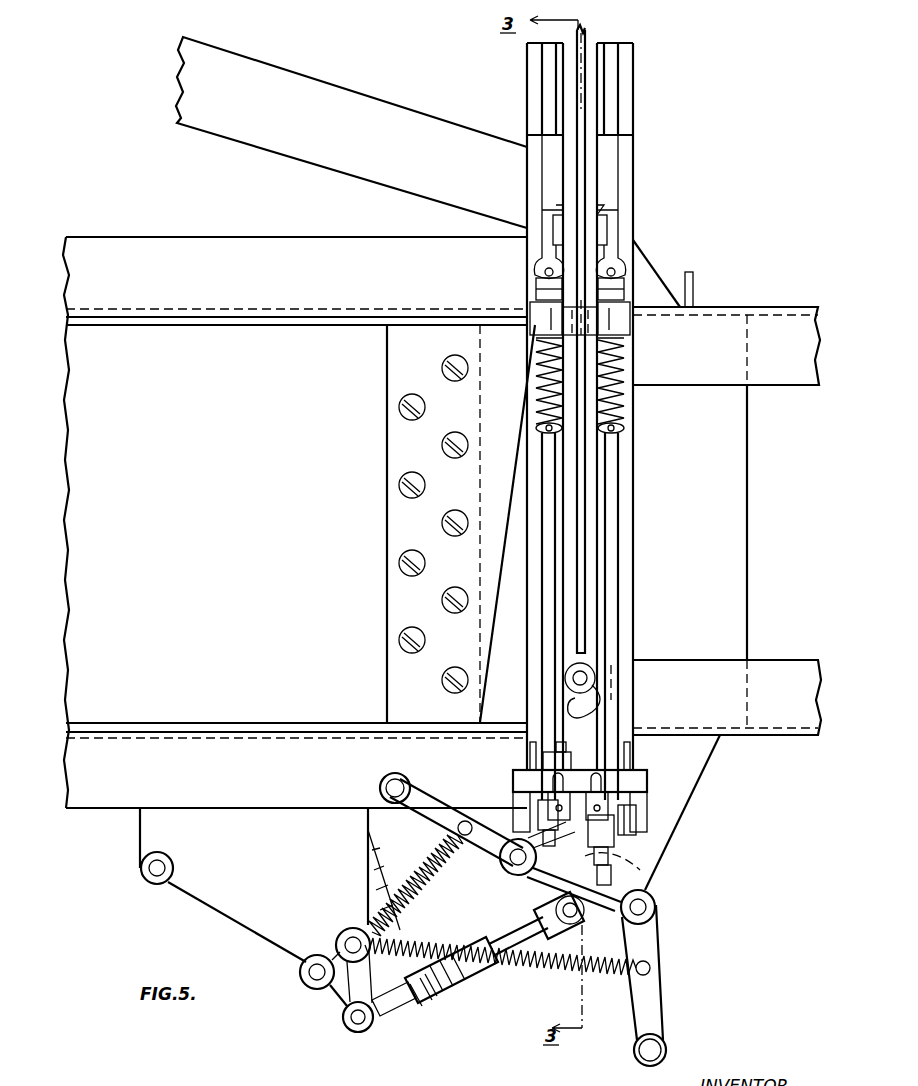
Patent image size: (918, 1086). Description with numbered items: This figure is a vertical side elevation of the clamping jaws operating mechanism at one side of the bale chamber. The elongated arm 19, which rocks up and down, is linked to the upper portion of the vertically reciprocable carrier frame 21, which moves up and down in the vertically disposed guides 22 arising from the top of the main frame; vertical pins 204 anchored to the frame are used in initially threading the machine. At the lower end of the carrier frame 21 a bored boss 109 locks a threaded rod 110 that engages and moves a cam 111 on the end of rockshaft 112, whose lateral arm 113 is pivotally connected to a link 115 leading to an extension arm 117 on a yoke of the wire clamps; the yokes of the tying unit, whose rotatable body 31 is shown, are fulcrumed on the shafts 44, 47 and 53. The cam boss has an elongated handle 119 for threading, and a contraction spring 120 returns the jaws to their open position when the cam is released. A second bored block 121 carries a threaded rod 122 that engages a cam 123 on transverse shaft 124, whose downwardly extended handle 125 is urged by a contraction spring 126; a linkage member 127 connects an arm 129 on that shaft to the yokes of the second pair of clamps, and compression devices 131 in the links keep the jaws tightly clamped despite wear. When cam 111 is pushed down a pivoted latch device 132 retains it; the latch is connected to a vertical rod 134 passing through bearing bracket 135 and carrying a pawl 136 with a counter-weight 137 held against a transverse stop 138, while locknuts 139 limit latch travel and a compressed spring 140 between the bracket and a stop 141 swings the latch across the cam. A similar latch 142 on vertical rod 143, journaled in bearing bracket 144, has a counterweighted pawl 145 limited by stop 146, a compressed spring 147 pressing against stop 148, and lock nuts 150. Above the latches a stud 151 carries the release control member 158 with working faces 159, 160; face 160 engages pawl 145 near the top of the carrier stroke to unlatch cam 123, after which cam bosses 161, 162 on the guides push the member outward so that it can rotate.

The elongated arm 19 is at (330, 88).
The carrier frame 21 is at (630, 40).
The guides 22 is at (530, 74).
The rotatable body 31 is at (392, 836).
The shaft 44 is at (303, 978).
The shaft 47 is at (344, 936).
The shaft 53 is at (165, 860).
The bored boss 109 is at (528, 772).
The threaded rod 110 is at (562, 748).
The cam 111 is at (528, 840).
The rockshaft 112 is at (510, 862).
The arm 113 is at (522, 880).
The link 115 is at (535, 935).
The extension arm 117 is at (392, 1018).
The elongated handle 119 is at (428, 798).
The contraction spring 120 is at (442, 850).
The bored block 121 is at (636, 830).
The threaded rod 122 is at (612, 882).
The cam 123 is at (575, 919).
The transverse shaft 124 is at (656, 908).
The handle 125 is at (655, 996).
The contraction spring 126 is at (530, 968).
The linkage member 127 is at (474, 930).
The arm 129 is at (640, 870).
The compression device 131 is at (424, 1000).
The latch device 132 is at (538, 810).
The elongated rod 134 is at (548, 685).
The bearing bracket 135 is at (542, 320).
The pawl 136 is at (555, 228).
The counter-weight 137 is at (545, 252).
The transverse stop 138 is at (560, 210).
The locknuts 139 is at (537, 296).
The compressed spring 140 is at (540, 392).
The transverse stop 141 is at (540, 428).
The latch 142 is at (605, 830).
The vertical rod 143 is at (614, 570).
The bearing bracket 144 is at (632, 318).
The counterweighted pawl 145 is at (606, 235).
The stop 146 is at (600, 212).
The compressed spring 147 is at (622, 395).
The stop 148 is at (622, 426).
The lock nuts 150 is at (622, 292).
The stud 151 is at (588, 672).
The release control member 158 is at (600, 692).
The working face 159 is at (582, 718).
The working face 160 is at (598, 675).
The cam boss 161 is at (550, 140).
The cam boss 162 is at (605, 140).
The vertical pin 204 is at (694, 284).